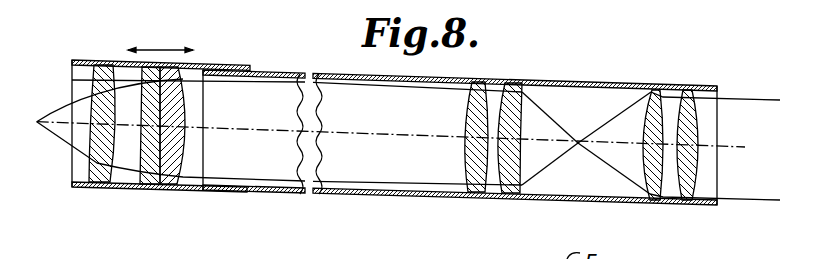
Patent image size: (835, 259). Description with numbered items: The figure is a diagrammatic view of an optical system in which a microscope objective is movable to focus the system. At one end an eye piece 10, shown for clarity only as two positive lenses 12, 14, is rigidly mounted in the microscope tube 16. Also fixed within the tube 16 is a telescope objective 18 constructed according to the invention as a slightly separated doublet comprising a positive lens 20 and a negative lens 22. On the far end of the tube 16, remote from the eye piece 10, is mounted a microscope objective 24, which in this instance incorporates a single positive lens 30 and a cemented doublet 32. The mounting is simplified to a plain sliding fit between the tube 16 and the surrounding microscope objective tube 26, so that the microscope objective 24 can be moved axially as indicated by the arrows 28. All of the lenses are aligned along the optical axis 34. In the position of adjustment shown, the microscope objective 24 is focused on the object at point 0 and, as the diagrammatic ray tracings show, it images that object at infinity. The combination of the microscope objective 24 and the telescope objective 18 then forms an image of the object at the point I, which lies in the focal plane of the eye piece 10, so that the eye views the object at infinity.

The object point 0 is at (36, 122).
The eye piece 10 is at (635, 196).
The positive lens 12 is at (660, 107).
The positive lens 14 is at (695, 100).
The microscope tube 16 is at (460, 197).
The telescope objective 18 is at (534, 92).
The positive lens 20 is at (473, 121).
The negative lens 22 is at (542, 116).
The microscope objective 24 is at (146, 195).
The microscope objective tube 26 is at (190, 192).
The arrows 28 is at (172, 50).
The single positive lens 30 is at (93, 80).
The cemented doublet 32 is at (143, 72).
The optical axis 34 is at (256, 128).
The image point I is at (577, 145).